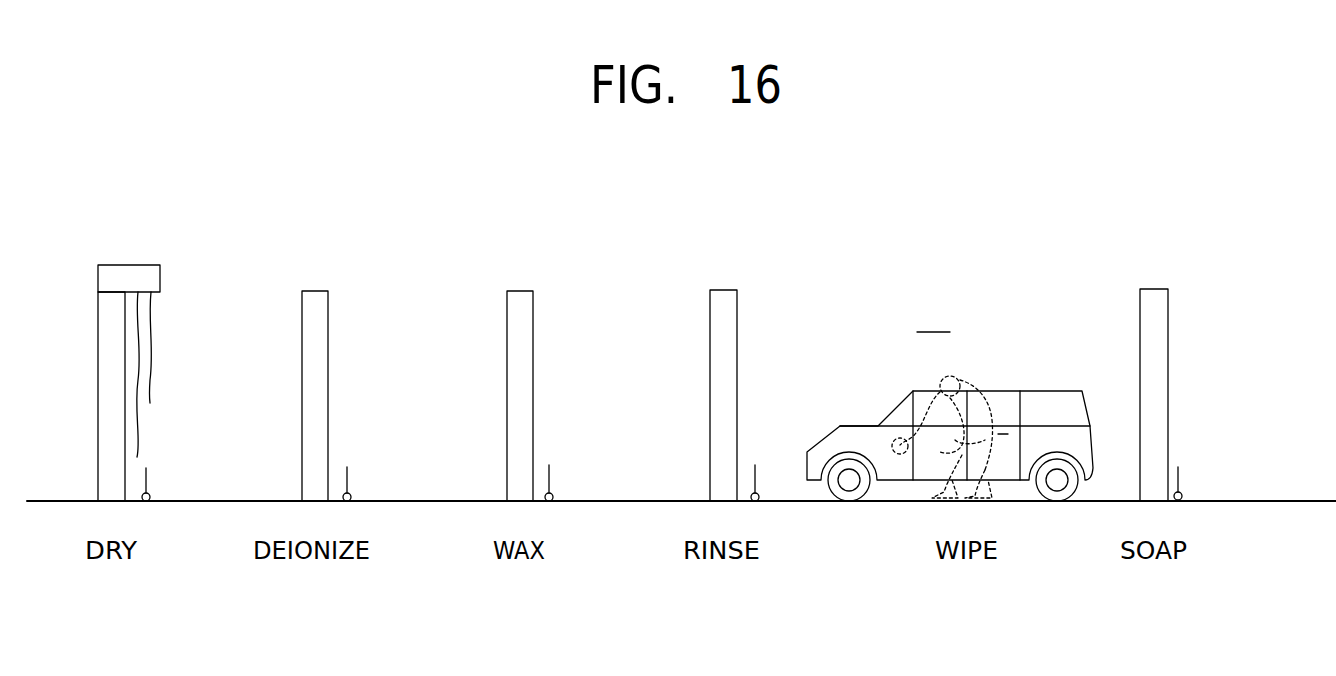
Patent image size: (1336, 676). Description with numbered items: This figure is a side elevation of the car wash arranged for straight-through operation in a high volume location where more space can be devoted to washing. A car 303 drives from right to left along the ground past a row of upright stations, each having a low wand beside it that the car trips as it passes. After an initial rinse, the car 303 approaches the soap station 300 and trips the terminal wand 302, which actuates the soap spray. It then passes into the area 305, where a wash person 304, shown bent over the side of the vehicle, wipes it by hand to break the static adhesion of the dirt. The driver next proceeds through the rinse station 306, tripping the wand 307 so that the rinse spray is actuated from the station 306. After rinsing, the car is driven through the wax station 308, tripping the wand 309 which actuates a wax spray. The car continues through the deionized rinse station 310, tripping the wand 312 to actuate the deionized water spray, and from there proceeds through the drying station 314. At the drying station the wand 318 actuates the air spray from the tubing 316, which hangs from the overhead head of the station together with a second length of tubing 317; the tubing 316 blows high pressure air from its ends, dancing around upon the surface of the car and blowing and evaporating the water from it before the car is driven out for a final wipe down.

The soap station 300 is at (1168, 345).
The terminal wand 302 is at (1180, 480).
The car 303 is at (1055, 391).
The wash person 304 is at (985, 428).
The area 305 is at (933, 331).
The station 306 is at (737, 328).
The wand 307 is at (758, 481).
The station 308 is at (533, 343).
The wand 309 is at (549, 480).
The deionized rinse station 310 is at (328, 348).
The wand 312 is at (347, 478).
The drying station 314 is at (160, 274).
The tubing 316 is at (151, 352).
The dryer air stream 317 is at (138, 423).
The wand 318 is at (146, 477).